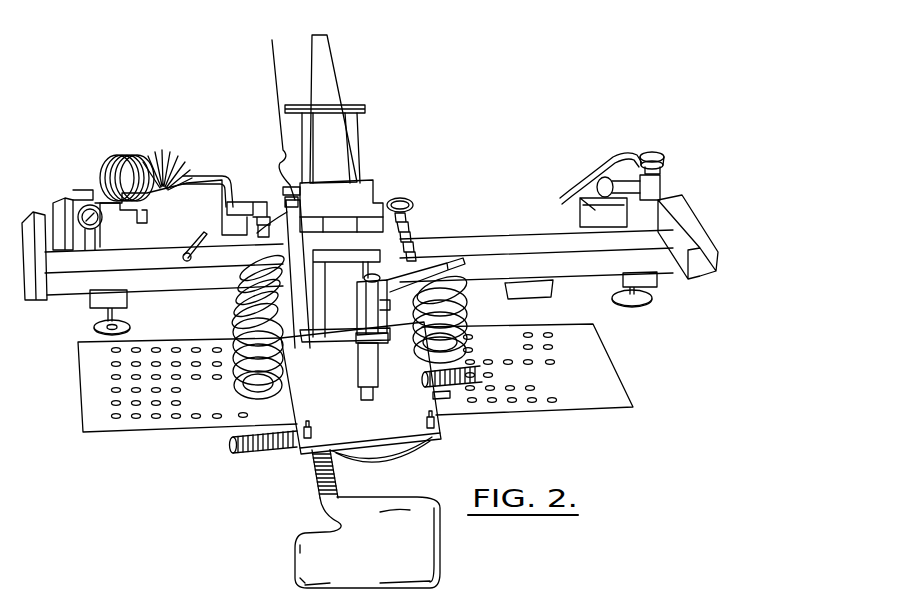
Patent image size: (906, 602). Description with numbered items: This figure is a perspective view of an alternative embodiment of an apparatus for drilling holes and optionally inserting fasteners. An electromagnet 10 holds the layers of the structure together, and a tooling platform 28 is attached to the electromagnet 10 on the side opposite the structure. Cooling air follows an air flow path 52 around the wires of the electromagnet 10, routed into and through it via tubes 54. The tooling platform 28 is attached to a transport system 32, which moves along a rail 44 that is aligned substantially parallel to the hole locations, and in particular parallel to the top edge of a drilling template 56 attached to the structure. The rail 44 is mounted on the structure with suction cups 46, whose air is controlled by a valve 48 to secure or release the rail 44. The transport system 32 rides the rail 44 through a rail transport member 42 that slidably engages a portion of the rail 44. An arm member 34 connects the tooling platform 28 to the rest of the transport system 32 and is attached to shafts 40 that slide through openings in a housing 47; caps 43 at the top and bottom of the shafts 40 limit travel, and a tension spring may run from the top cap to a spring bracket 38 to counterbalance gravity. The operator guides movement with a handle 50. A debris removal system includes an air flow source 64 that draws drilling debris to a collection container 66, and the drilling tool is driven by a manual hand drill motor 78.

The electromagnet 10 is at (390, 457).
The tooling platform 28 is at (447, 428).
The transport system 32 is at (265, 120).
The arm member 34 is at (377, 265).
The spring bracket 38 is at (332, 53).
The shafts 40 is at (355, 137).
The rail transport member 42 is at (247, 227).
The caps 43 is at (383, 200).
The rail 44 is at (567, 278).
The suction cups 46 is at (648, 304).
The housing 47 is at (362, 197).
The valve 48 is at (672, 142).
The handle 50 is at (252, 455).
The air flow path 52 is at (118, 141).
The tubes 54 is at (231, 382).
The drilling template 56 is at (79, 398).
The air flow source 64 is at (317, 492).
The collection container 66 is at (305, 547).
The drill motor 78 is at (455, 339).